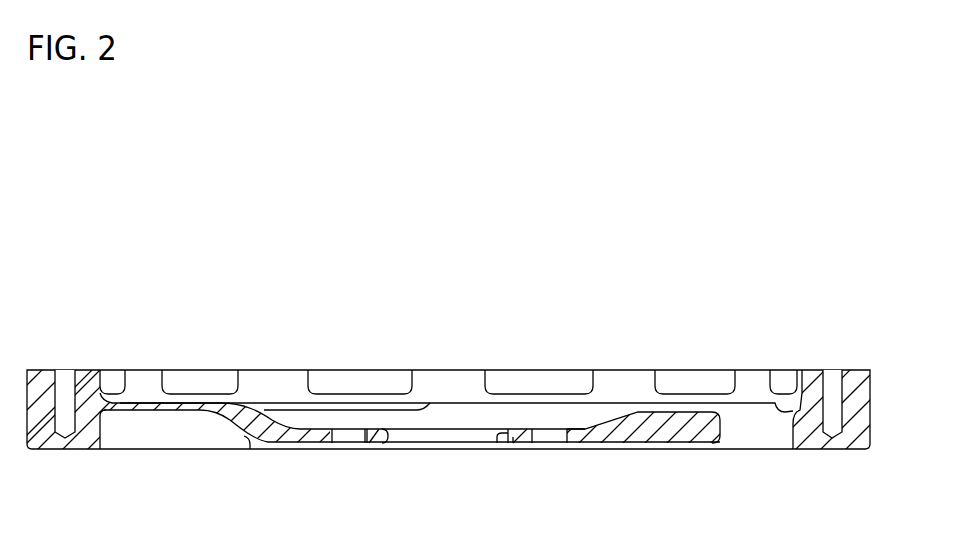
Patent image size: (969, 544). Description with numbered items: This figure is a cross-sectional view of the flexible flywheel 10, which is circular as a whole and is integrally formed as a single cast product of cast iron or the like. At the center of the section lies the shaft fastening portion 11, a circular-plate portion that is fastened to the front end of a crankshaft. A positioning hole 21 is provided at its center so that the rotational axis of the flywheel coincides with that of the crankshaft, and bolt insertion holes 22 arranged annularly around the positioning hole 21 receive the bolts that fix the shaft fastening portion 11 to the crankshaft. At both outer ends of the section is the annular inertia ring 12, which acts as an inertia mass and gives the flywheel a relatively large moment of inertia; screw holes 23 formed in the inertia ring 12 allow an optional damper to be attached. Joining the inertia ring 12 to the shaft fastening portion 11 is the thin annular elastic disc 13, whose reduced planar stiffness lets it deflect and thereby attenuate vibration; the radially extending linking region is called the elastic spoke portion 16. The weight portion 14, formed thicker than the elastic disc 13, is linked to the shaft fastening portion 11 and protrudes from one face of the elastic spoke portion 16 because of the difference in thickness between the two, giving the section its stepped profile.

The flexible flywheel 10 is at (740, 314).
The shaft fastening portion 11 is at (448, 427).
The inertia ring 12 is at (830, 449).
The elastic disc 13 is at (613, 403).
The weight portion 14 is at (684, 444).
The elastic spoke portion 16 is at (173, 416).
The positioning hole 21 is at (507, 434).
The bolt insertion hole 22 is at (332, 436).
The screw hole 23 is at (63, 370).